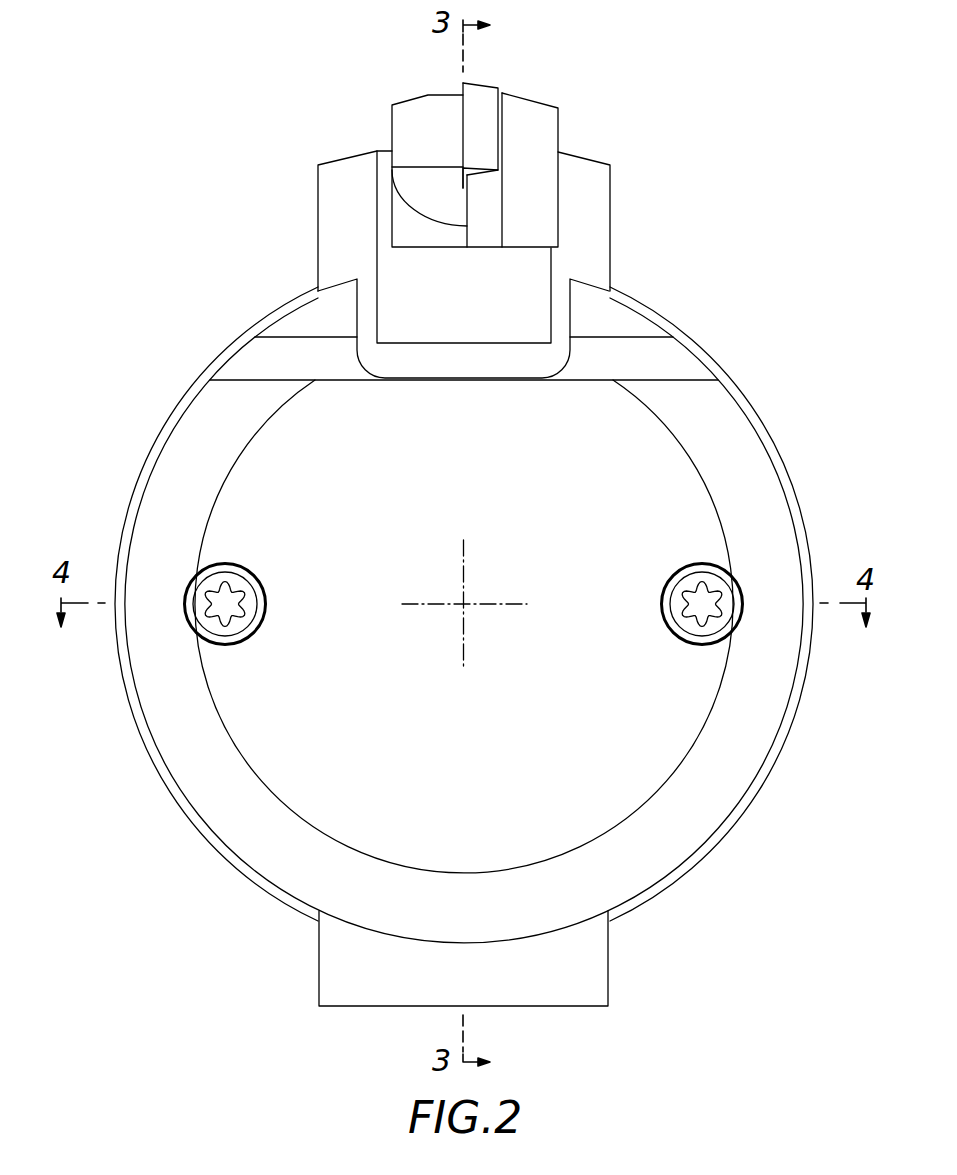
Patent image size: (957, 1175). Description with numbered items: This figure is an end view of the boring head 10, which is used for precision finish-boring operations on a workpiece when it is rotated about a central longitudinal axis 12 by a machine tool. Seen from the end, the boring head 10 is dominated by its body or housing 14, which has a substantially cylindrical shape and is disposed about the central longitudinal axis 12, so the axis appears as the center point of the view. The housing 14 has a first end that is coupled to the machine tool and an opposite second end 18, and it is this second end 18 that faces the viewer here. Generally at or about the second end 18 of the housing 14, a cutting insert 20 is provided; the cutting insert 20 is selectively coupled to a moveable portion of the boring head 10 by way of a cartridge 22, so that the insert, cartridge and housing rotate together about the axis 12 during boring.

The boring head 10 is at (683, 187).
The central longitudinal axis 12 is at (464, 604).
The housing 14 is at (768, 432).
The second end 18 is at (187, 838).
The cutting insert 20 is at (473, 93).
The cartridge 22 is at (551, 124).